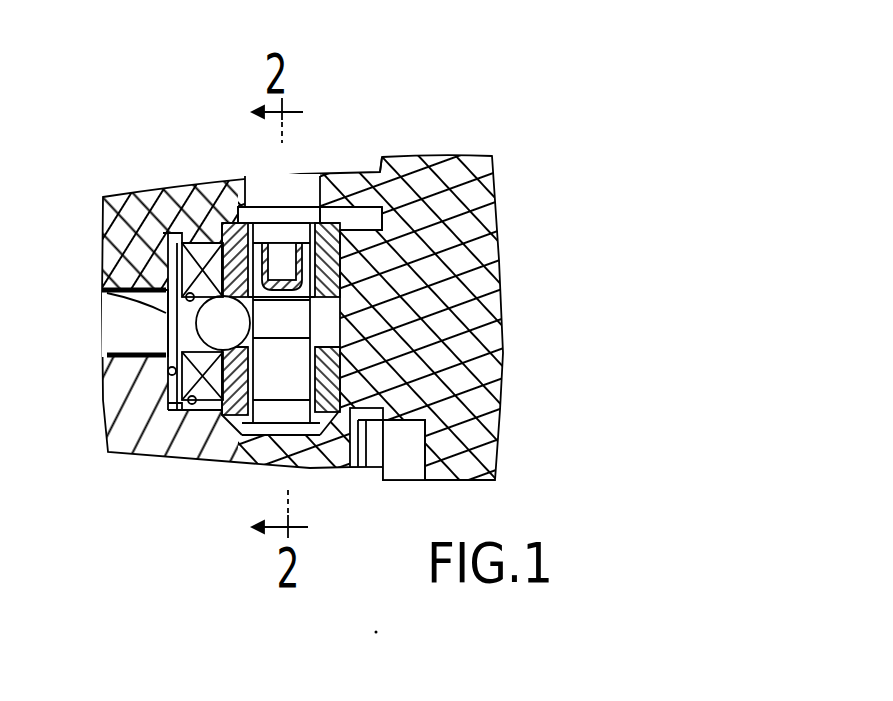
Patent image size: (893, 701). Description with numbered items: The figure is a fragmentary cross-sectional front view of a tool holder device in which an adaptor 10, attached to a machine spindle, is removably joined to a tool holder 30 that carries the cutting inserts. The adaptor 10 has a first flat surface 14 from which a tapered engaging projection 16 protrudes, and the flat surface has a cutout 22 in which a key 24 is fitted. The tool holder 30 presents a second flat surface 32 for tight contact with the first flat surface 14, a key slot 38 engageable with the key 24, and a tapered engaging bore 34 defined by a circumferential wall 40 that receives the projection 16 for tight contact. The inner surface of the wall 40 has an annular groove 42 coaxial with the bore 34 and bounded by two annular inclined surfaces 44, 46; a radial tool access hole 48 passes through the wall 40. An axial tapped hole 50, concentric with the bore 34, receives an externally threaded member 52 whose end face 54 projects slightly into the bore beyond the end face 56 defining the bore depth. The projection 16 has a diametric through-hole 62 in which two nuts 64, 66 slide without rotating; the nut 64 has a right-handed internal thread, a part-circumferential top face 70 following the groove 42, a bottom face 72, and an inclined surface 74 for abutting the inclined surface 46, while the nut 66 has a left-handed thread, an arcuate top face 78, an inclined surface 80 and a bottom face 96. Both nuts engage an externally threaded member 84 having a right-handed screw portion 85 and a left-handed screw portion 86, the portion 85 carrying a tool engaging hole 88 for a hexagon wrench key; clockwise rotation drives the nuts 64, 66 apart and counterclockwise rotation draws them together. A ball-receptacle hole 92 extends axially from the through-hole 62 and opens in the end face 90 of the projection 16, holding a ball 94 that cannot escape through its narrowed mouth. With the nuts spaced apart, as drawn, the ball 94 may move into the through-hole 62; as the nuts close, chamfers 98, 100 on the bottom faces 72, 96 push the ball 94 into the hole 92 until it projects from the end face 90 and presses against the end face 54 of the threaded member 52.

The adaptor 10 is at (401, 159).
The first flat surface 14 is at (372, 172).
The engaging projection 16 is at (182, 240).
The cutout 22 is at (420, 473).
The key 24 is at (397, 465).
The tool holder 30 is at (118, 432).
The second flat surface 32 is at (374, 206).
The engaging bore 34 is at (172, 412).
The key slot 38 is at (363, 460).
The circumferential wall 40 is at (263, 458).
The annular groove 42 is at (302, 440).
The inclined surface 44 is at (222, 228).
The inclined surface 46 is at (440, 205).
The tool access hole 48 is at (272, 207).
The tapped hole 50 is at (104, 356).
The externally threaded member 52 is at (113, 311).
The end face 54 is at (103, 290).
The end face 56 is at (168, 373).
The through-hole 62 is at (297, 320).
The nut 64 is at (460, 225).
The nut 66 is at (487, 414).
The top face 70 is at (252, 207).
The bottom face 72 is at (315, 305).
The inclined surface 74 is at (485, 178).
The arcuate top face 78 is at (232, 438).
The inclined surface 80 is at (490, 463).
The externally threaded member 84 is at (440, 357).
The right-handed screw portion 85 is at (487, 259).
The left-handed screw portion 86 is at (490, 438).
The tool engaging hole 88 is at (295, 207).
The end face 90 is at (150, 405).
The ball-receptacle hole 92 is at (103, 198).
The ball 94 is at (103, 240).
The bottom face 96 is at (305, 390).
The chamfer 98 is at (166, 236).
The chamfer 100 is at (188, 397).